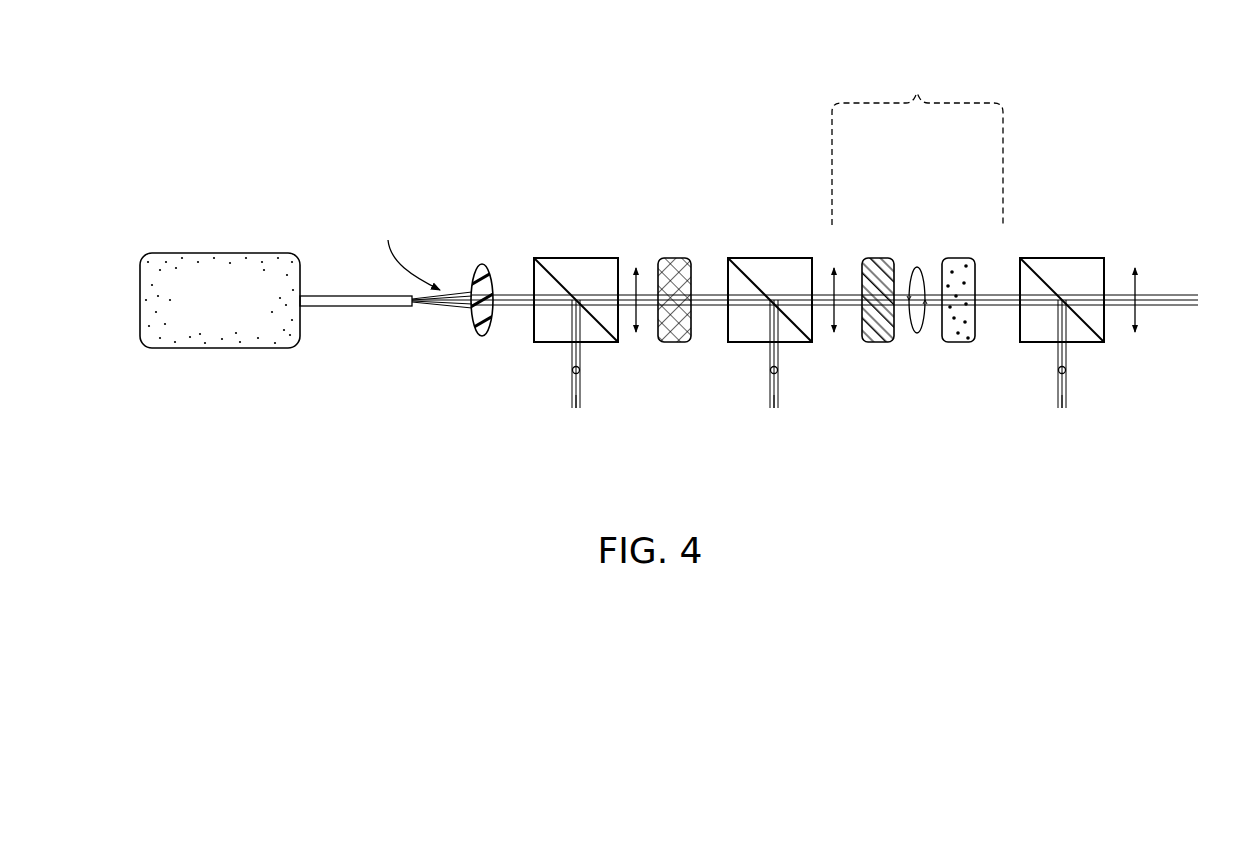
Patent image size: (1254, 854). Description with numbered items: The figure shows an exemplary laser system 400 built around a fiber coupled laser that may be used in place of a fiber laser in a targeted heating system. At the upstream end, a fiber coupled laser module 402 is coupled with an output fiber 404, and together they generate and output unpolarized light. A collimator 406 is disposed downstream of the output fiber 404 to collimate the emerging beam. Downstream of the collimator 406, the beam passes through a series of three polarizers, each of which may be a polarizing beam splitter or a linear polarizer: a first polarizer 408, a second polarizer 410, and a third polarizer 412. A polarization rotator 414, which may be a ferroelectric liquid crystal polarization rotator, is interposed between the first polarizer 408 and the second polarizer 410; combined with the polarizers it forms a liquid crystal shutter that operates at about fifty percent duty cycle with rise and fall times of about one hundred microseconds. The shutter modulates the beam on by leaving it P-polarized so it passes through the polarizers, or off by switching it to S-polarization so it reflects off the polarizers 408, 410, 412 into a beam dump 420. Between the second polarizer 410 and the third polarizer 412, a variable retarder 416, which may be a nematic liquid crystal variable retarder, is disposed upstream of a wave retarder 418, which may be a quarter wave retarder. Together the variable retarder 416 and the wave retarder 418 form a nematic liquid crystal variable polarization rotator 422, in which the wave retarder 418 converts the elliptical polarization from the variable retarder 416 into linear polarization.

The laser system 400 is at (228, 104).
The fiber coupled laser module 402 is at (218, 350).
The output fiber 404 is at (315, 308).
The collimator 406 is at (478, 310).
The first polarizer 408 is at (543, 258).
The second polarizer 410 is at (741, 258).
The third polarizer 412 is at (1031, 258).
The polarization rotator 414 is at (661, 345).
The variable retarder 416 is at (866, 345).
The wave retarder 418 is at (960, 345).
The beam dump 420 is at (568, 395).
The nematic liquid crystal variable polarization rotator 422 is at (917, 144).